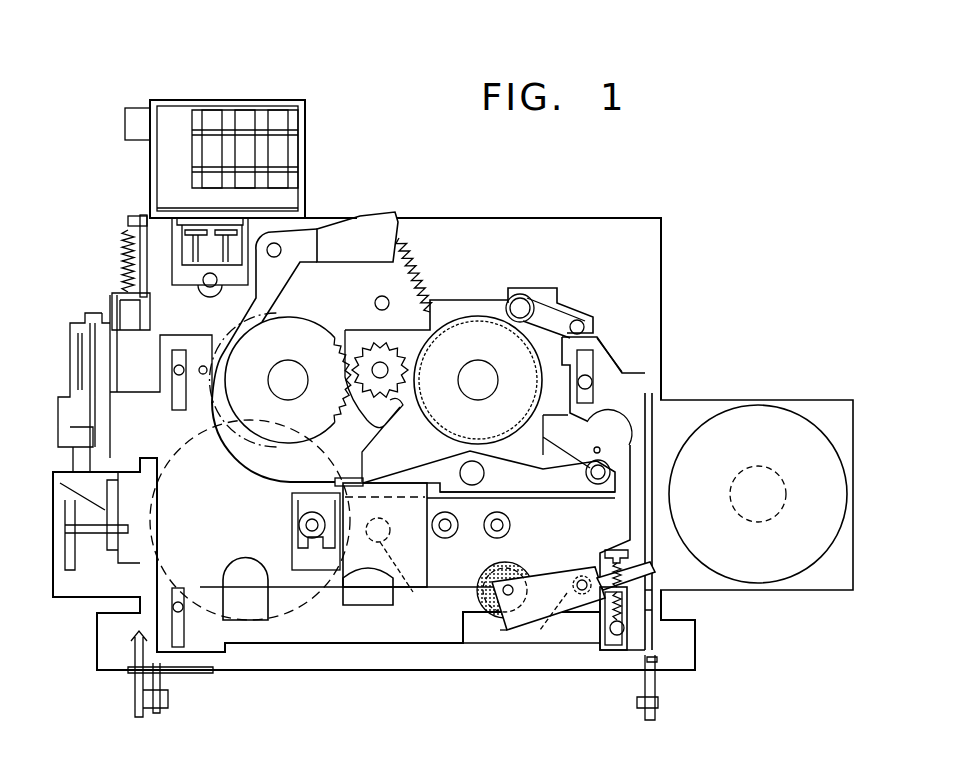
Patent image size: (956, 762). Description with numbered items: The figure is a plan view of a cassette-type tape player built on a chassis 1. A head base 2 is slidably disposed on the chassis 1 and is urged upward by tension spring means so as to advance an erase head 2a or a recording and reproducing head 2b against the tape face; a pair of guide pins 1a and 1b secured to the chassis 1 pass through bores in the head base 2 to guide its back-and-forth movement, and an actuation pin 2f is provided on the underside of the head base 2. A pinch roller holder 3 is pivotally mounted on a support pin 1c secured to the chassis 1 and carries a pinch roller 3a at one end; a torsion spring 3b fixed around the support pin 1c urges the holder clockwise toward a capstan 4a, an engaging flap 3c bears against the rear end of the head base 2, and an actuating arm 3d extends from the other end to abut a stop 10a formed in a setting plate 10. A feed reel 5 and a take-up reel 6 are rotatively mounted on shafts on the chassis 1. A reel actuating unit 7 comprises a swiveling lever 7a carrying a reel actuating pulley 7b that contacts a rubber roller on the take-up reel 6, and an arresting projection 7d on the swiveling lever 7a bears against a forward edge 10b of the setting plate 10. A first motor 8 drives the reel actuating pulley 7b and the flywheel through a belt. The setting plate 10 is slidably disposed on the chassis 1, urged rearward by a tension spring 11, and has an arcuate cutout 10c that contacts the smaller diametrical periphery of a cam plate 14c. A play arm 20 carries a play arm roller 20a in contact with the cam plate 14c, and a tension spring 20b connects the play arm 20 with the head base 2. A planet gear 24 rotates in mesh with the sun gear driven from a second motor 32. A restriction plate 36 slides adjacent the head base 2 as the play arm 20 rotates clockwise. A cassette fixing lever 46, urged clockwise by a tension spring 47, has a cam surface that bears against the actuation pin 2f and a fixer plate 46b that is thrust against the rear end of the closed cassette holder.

The chassis 1 is at (655, 220).
The guide pin 1a is at (178, 365).
The guide pin 1b is at (180, 640).
The support pin 1c is at (582, 596).
The head base 2 is at (427, 547).
The erase head 2a is at (262, 600).
The recording and reproducing head 2b is at (365, 600).
The actuation pin 2f is at (412, 593).
The pinch roller holder 3 is at (557, 580).
The pinch roller 3a is at (505, 575).
The torsion spring 3b is at (545, 628).
The engaging flap 3c is at (498, 632).
The actuating arm 3d is at (650, 568).
The capstan 4a is at (510, 525).
The feed reel 5 is at (310, 340).
The take-up reel 6 is at (458, 330).
The reel actuating unit 7 is at (543, 297).
The swiveling lever 7a is at (552, 318).
The reel actuating pulley 7b is at (518, 297).
The arresting projection 7d is at (590, 326).
The first motor 8 is at (833, 400).
The setting plate 10 is at (630, 375).
The stop 10a is at (648, 600).
The forward edge 10b is at (597, 338).
The arcuate cutout 10c is at (620, 430).
The tension spring 11 is at (620, 625).
The cam plate 14c is at (620, 433).
The play arm 20 is at (437, 475).
The play arm roller 20a is at (608, 470).
The tension spring 20b is at (352, 480).
The planet gear 24 is at (386, 352).
The second motor 32 is at (165, 456).
The restriction plate 36 is at (353, 448).
The cassette fixing lever 46 is at (345, 243).
The fixer plate 46b is at (396, 217).
The tension spring 47 is at (418, 275).